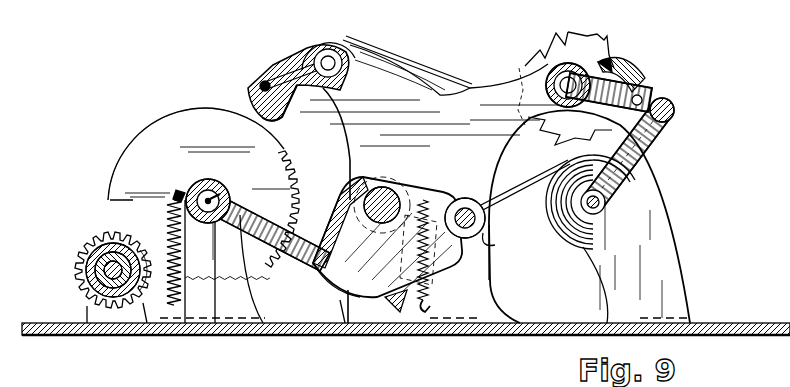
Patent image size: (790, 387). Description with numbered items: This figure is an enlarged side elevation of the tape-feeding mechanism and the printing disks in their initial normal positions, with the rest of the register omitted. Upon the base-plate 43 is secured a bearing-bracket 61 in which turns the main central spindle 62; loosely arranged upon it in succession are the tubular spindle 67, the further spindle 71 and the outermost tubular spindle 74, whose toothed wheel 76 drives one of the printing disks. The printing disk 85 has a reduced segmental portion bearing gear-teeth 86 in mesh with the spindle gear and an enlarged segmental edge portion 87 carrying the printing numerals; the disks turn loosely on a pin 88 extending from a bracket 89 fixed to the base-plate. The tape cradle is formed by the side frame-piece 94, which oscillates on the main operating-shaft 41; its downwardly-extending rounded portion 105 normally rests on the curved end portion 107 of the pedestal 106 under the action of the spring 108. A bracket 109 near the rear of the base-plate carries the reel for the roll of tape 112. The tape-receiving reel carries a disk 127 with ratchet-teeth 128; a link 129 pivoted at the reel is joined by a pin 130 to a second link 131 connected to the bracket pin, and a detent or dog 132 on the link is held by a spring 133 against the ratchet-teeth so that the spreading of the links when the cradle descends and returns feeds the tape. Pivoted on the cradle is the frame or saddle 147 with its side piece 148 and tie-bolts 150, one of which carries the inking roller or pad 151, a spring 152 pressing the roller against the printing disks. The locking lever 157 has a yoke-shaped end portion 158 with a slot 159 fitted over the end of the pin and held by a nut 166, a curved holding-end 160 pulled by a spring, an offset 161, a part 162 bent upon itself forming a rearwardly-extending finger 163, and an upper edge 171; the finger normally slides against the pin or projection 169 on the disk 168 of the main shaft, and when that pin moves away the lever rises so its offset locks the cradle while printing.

The main operating-shaft 41 is at (386, 190).
The base-plate 43 is at (171, 327).
The bearing-bracket 61 is at (100, 315).
The main central spindle 62 is at (112, 263).
The tubular spindle 67 is at (104, 278).
The spindle 71 is at (94, 270).
The tubular spindle 74 is at (95, 265).
The toothed wheel 76 is at (88, 295).
The printing disk 85 is at (199, 154).
The gear-teeth 86 is at (268, 256).
The enlarged segmental edge portion 87 is at (168, 123).
The pin 88 is at (231, 202).
The bracket 89 is at (227, 261).
The side frame-piece 94 is at (456, 94).
The rounded portion 105 is at (487, 207).
The pedestal 106 is at (483, 277).
The curved end portion 107 is at (495, 237).
The spring 108 is at (433, 295).
The bracket 109 is at (638, 217).
The roll of tape 112 is at (407, 65).
The disk 127 is at (562, 40).
The ratchet-teeth 128 is at (574, 36).
The link 129 is at (657, 102).
The pin 130 is at (675, 107).
The second link 131 is at (647, 150).
The detent or dog 132 is at (640, 72).
The spring 133 is at (610, 68).
The frame or saddle 147 is at (292, 83).
The side piece 148 is at (262, 80).
The tie-bolt 150 is at (260, 89).
The inking roller or pad 151 is at (296, 116).
The spring 152 is at (318, 57).
The locking or holding lever 157 is at (352, 233).
The yoke-shaped end portion 158 is at (210, 190).
The slot 159 is at (216, 226).
The holding-end 160 is at (178, 193).
The offset 161 is at (172, 232).
The part bent upon itself 162 is at (403, 302).
The finger 163 is at (347, 303).
The nut 166 is at (224, 192).
The disk 168 is at (350, 210).
The pin or projection 169 is at (346, 279).
The upper edge 171 is at (258, 230).